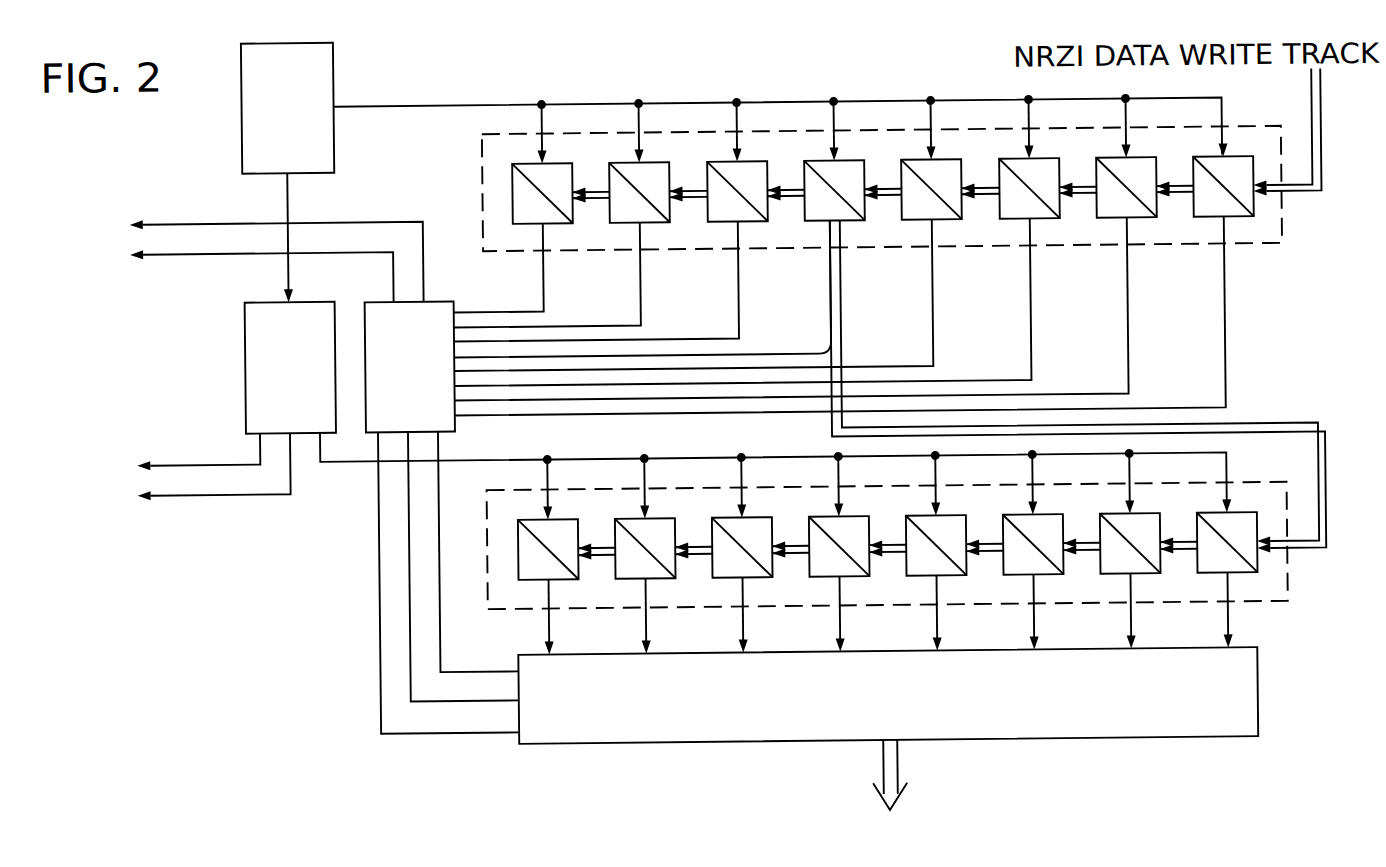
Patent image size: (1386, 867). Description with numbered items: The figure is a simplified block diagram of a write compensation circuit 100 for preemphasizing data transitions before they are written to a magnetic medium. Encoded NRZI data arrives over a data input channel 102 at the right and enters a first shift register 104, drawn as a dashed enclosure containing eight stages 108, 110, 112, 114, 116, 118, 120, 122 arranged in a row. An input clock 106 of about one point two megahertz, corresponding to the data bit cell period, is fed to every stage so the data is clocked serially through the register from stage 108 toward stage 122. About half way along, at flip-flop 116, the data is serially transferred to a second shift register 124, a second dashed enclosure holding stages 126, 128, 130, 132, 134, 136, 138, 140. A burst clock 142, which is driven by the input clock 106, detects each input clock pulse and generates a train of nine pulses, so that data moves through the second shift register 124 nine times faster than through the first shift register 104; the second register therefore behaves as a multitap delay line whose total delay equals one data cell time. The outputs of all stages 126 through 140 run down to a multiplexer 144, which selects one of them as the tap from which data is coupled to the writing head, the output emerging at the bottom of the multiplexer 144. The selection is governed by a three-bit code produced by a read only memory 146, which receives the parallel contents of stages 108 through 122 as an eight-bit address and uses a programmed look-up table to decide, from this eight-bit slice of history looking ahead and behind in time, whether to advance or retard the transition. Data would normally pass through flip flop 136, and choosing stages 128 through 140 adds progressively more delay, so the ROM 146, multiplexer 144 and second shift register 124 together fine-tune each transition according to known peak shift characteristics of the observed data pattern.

The write compensation circuit 100 is at (355, 608).
The data input channel 102 is at (1321, 145).
The first shift register 104 is at (484, 134).
The input clock 106 is at (337, 52).
The stage 108 is at (1235, 170).
The stage 110 is at (1140, 168).
The stage 112 is at (1043, 168).
The stage 114 is at (945, 168).
The flip-flop 116 is at (848, 168).
The stage 118 is at (751, 168).
The stage 120 is at (653, 168).
The stage 122 is at (556, 168).
The second shift register 124 is at (1292, 599).
The stage 126 is at (1234, 526).
The stage 128 is at (1140, 525).
The stage 130 is at (1043, 525).
The stage 132 is at (946, 525).
The stage 134 is at (849, 525).
The flip flop 136 is at (752, 525).
The stage 138 is at (655, 525).
The stage 140 is at (558, 525).
The burst clock 142 is at (258, 311).
The multiplexer 144 is at (1245, 687).
The read only memory 146 is at (430, 303).